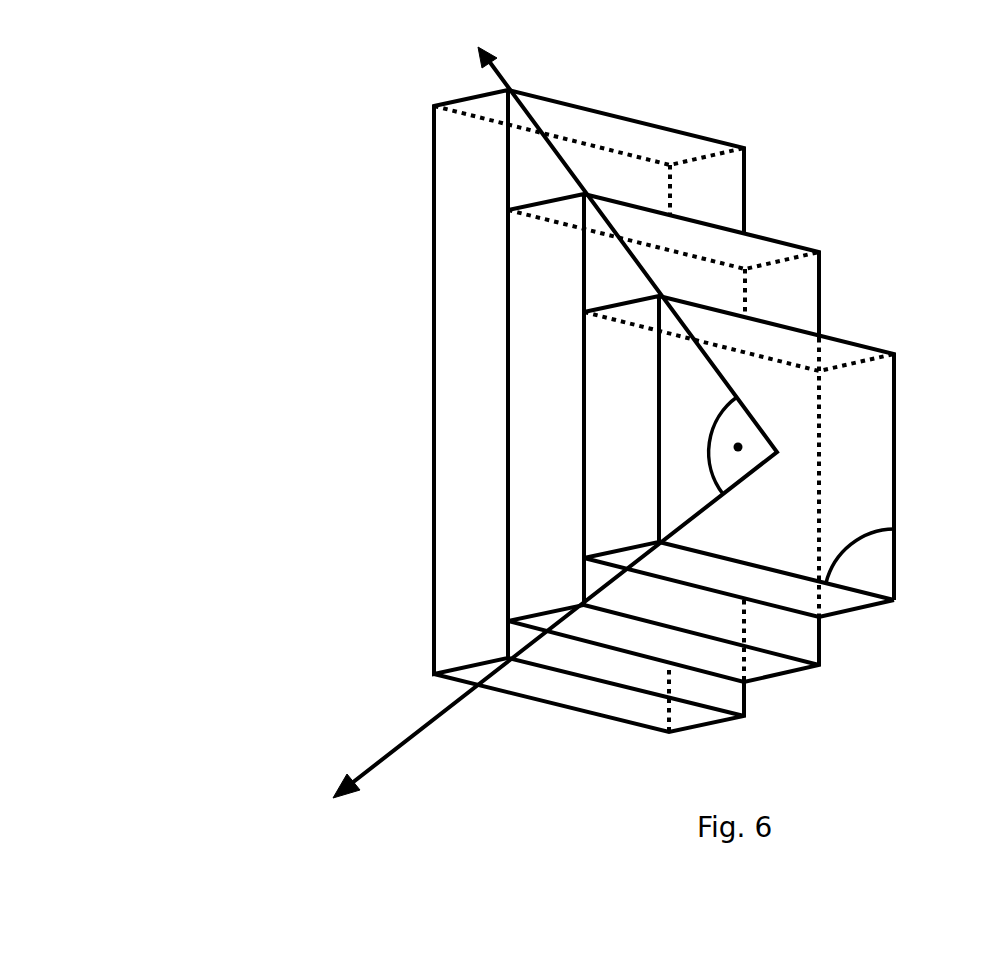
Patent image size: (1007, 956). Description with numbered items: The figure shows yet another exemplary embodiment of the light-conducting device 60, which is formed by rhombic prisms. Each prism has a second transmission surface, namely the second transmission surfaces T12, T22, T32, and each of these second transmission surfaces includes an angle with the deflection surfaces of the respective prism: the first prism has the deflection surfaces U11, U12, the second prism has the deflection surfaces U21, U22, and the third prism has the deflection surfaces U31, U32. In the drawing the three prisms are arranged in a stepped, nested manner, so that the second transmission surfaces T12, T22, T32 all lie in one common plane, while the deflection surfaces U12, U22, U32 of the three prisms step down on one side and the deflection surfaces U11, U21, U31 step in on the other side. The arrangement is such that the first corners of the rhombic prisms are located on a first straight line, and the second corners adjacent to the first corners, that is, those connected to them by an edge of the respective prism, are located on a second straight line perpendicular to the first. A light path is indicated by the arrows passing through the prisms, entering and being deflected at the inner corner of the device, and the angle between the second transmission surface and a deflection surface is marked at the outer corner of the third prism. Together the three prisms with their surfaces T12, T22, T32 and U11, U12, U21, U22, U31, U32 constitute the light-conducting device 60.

The light-conducting device 60 is at (288, 273).
The second transmission surface T12 is at (467, 248).
The second transmission surface T22 is at (540, 410).
The second transmission surface T32 is at (605, 490).
The deflection surface U12 is at (595, 128).
The deflection surface U22 is at (787, 250).
The deflection surface U32 is at (842, 353).
The deflection surface U11 is at (608, 702).
The deflection surface U21 is at (713, 657).
The deflection surface U31 is at (788, 599).